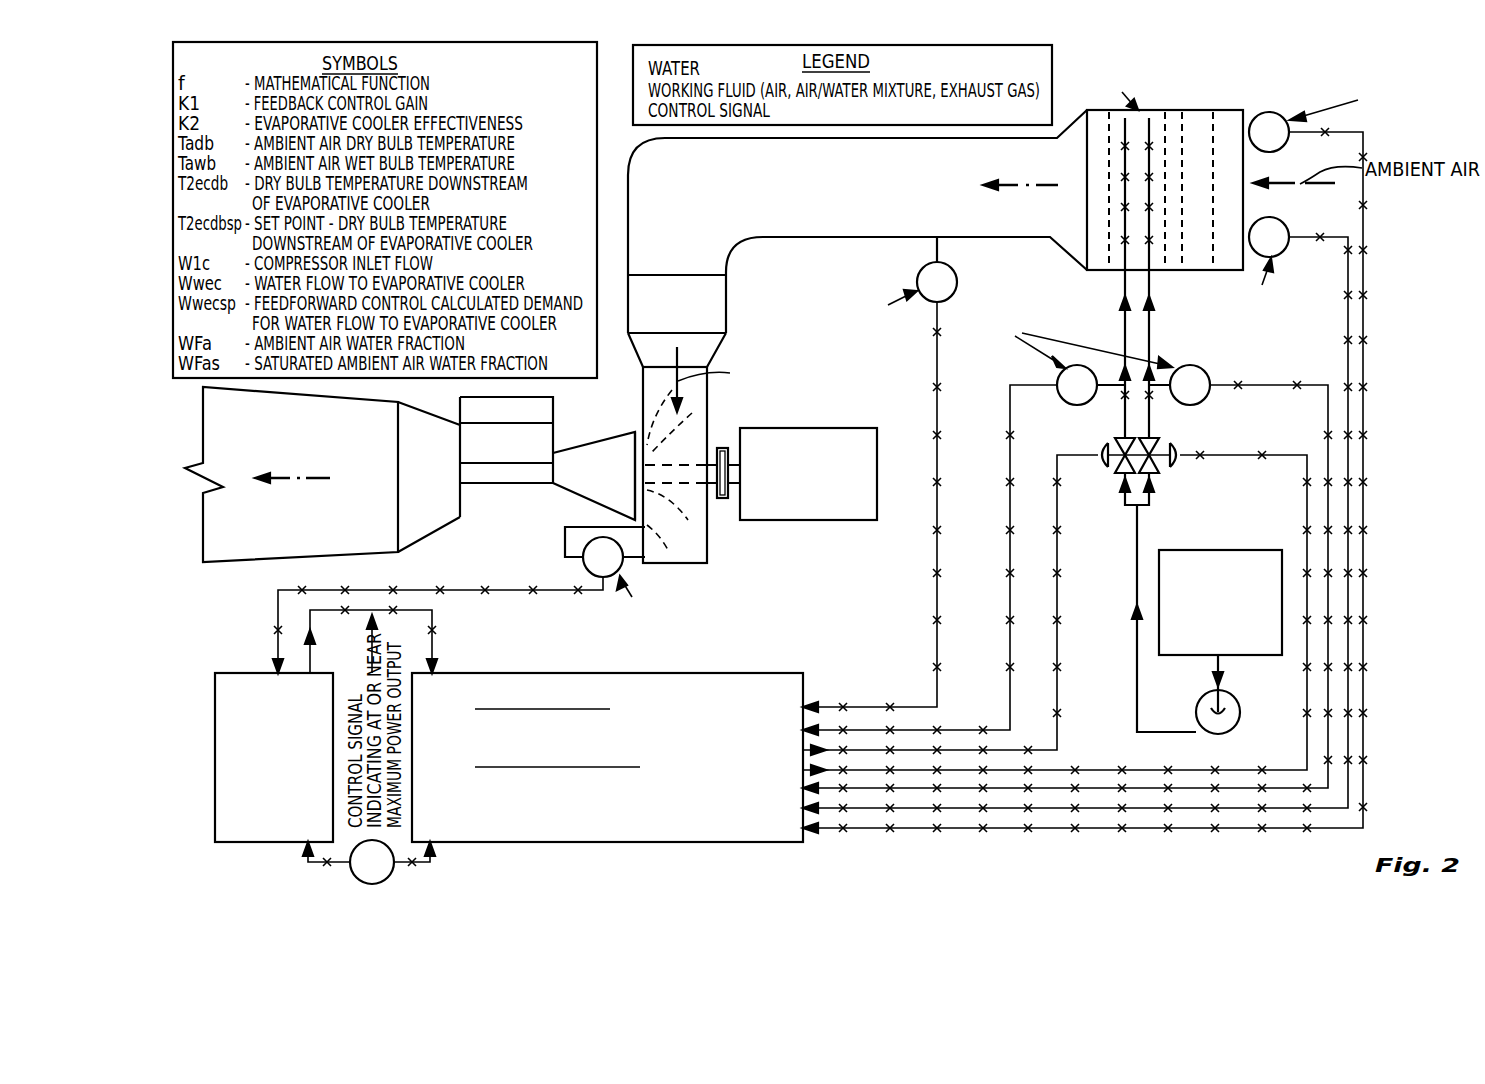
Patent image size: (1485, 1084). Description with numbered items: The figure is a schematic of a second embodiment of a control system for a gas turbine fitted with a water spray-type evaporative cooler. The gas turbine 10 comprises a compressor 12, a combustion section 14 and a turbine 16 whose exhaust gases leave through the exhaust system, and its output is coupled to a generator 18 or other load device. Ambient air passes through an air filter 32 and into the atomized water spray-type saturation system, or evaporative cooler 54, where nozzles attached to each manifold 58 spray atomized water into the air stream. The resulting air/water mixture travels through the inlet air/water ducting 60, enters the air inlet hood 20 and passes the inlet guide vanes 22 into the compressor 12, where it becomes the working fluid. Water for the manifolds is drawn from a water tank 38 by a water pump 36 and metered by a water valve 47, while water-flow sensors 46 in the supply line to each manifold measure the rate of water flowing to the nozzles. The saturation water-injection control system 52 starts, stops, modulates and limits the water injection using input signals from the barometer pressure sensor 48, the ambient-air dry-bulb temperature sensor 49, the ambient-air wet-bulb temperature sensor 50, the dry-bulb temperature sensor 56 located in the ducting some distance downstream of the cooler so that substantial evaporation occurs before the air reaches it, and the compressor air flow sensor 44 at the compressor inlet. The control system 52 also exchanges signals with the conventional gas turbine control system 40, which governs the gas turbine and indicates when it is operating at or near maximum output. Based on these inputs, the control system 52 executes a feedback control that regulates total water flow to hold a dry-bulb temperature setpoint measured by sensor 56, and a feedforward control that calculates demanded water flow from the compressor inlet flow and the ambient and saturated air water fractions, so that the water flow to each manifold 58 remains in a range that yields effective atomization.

The gas turbine 10 is at (517, 519).
The compressor 12 is at (609, 483).
The combustion section 14 is at (517, 456).
The turbine 16 is at (437, 483).
The generator 18 is at (822, 514).
The air inlet hood 20 is at (708, 549).
The inlet guide vanes (IGVs) 22 is at (640, 433).
The air filter 32 is at (1206, 272).
The water pump 36 is at (1240, 706).
The water tank 38 is at (1232, 646).
The gas turbine control system 40 is at (288, 817).
The air flow sensor 44 is at (624, 567).
The water-flow sensors 46 is at (1063, 401).
The water valve 47 is at (1151, 474).
The barometer pressure sensor 48 is at (388, 877).
The dry-bulb temperature sensor 49 is at (1257, 114).
The wet-bulb temperature sensor 50 is at (1285, 252).
The saturation water-injection control system 52 is at (784, 766).
The atomized water spray-type saturation system (evaporative cooler) 54 is at (1120, 272).
The dry-bulb temperature sensor 56 is at (957, 272).
The manifold 58 is at (1125, 272).
The inlet air/water ducting 60 is at (804, 197).